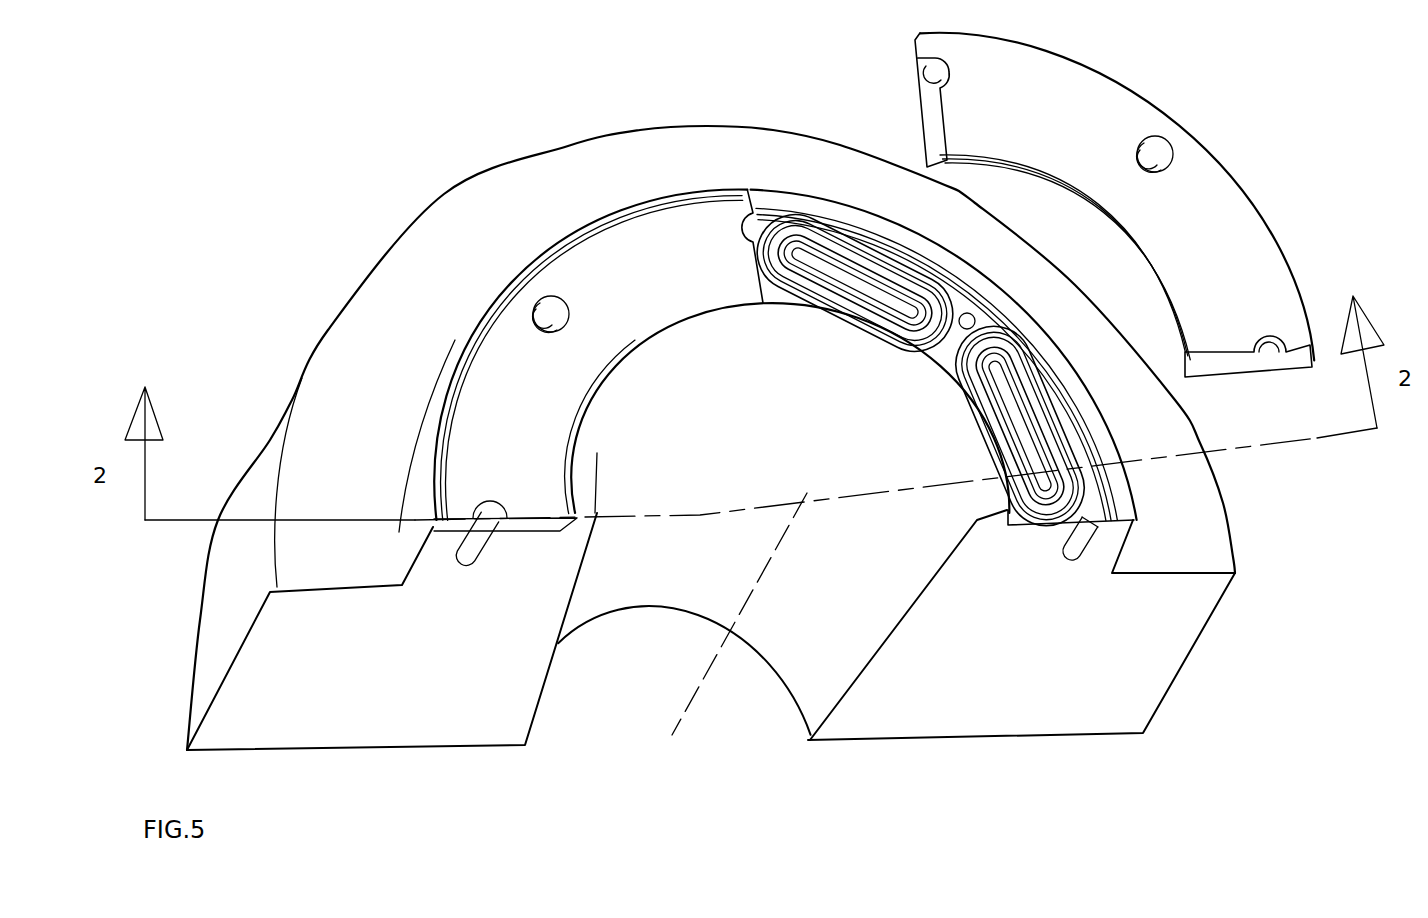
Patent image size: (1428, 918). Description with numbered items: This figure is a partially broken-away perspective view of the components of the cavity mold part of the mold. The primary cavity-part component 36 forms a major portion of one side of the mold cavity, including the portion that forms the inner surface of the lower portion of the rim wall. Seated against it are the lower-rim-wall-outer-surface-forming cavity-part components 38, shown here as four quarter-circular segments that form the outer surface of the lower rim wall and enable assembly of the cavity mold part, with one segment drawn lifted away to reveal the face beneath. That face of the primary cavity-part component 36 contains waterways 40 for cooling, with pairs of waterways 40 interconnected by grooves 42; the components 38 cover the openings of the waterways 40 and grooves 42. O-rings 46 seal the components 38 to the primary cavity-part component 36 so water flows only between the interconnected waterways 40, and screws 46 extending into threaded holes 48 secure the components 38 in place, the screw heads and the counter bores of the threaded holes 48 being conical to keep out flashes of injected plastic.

The primary cavity-part component 36 is at (980, 713).
The lower-rim-wall-outer-surface-forming cavity-part component 38 is at (690, 295).
The waterway 40 is at (887, 320).
The groove 42 is at (840, 292).
The O-ring / screw 46 is at (780, 303).
The threaded hole 48 is at (483, 560).